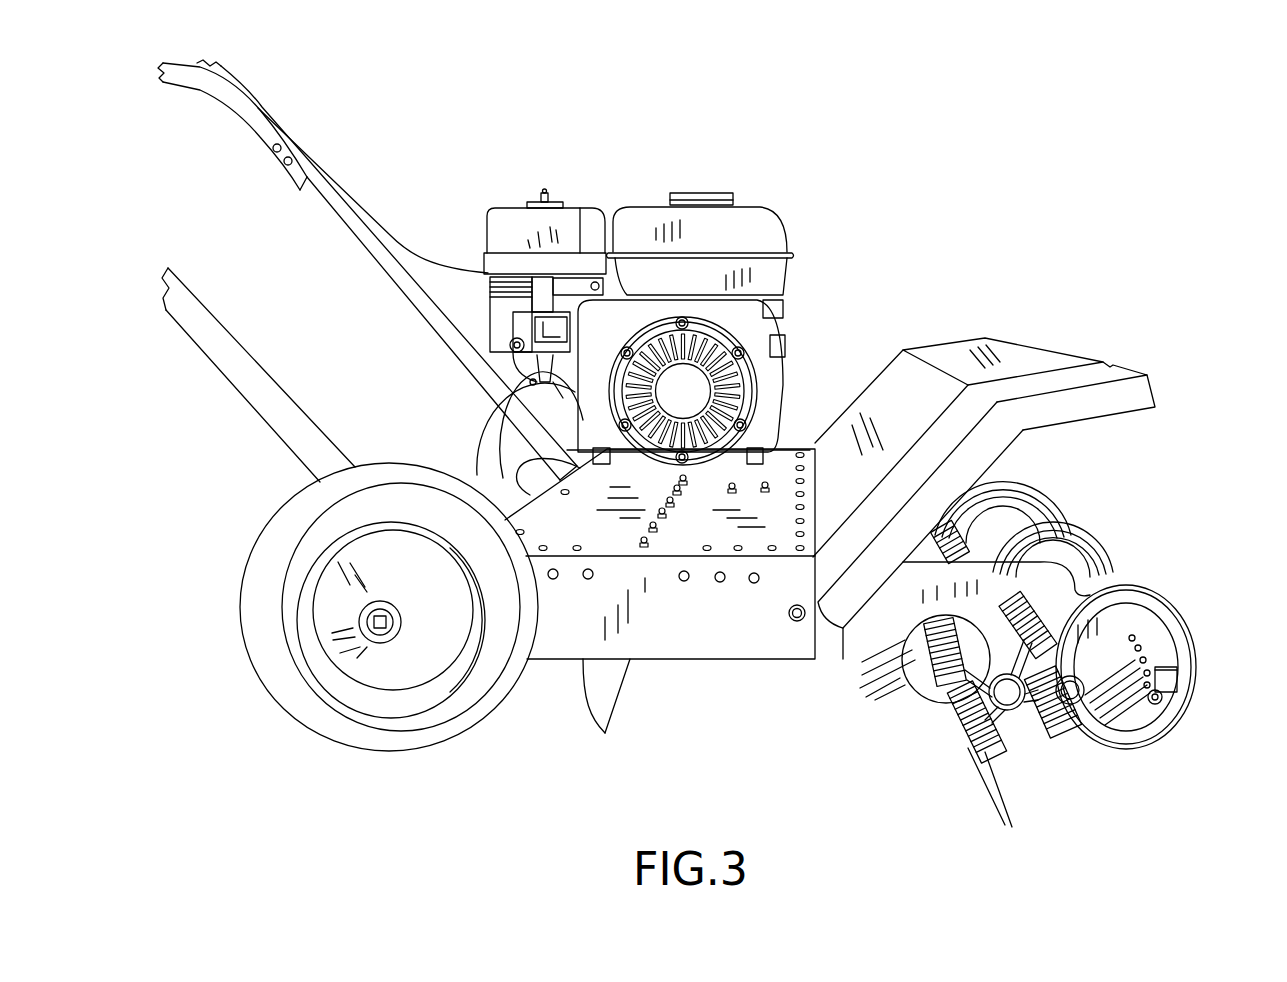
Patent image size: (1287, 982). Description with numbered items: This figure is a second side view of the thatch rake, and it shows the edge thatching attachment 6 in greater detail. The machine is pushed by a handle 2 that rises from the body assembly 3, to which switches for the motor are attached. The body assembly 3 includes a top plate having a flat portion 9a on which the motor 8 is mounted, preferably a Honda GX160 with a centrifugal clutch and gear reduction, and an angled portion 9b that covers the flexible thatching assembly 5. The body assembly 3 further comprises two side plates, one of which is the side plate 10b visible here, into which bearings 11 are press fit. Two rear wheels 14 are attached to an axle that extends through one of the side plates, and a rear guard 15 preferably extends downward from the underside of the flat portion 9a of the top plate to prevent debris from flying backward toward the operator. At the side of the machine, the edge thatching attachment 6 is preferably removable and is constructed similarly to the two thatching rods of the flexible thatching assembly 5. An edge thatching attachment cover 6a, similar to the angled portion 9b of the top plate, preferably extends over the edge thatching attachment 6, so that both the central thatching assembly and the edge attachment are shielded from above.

The handle 2 is at (198, 313).
The body assembly 3 is at (197, 85).
The flexible thatching assembly 5 is at (1152, 521).
The edge thatching attachment 6 is at (1042, 779).
The edge thatching attachment cover 6a is at (1117, 363).
The motor 8 is at (772, 235).
The flat portion 9a is at (600, 543).
The angled portion 9b is at (1017, 353).
The side plate 10b is at (703, 643).
The bearings 11 is at (872, 692).
The rear wheels 14 is at (343, 725).
The rear guard 15 is at (592, 697).